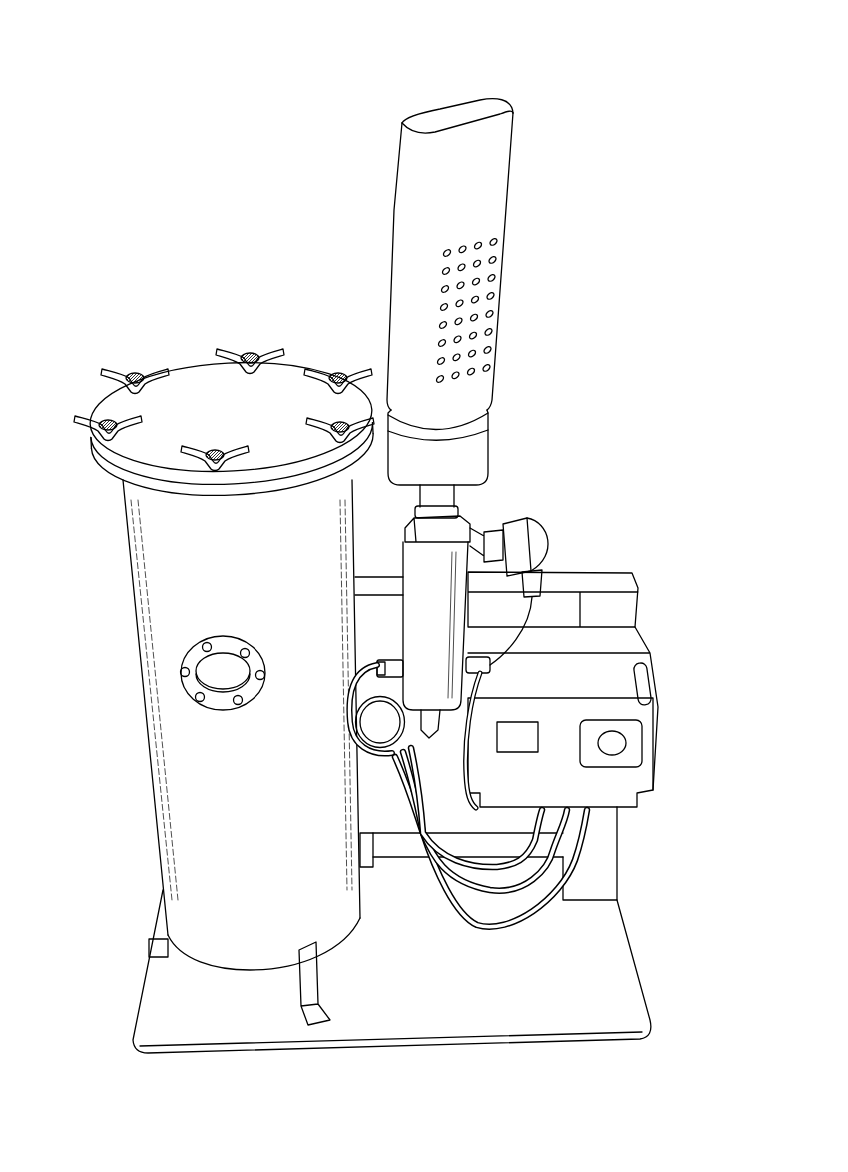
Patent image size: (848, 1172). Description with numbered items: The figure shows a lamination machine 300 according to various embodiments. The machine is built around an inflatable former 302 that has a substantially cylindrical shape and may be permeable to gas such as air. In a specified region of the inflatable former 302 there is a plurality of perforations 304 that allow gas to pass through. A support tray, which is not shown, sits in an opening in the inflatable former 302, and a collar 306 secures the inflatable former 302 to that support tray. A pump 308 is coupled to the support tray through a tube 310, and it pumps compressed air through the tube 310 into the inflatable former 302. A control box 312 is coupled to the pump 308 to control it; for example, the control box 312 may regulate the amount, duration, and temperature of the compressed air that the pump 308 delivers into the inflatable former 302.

The lamination machine 300 is at (169, 130).
The inflatable former 302 is at (482, 167).
The perforations 304 is at (490, 300).
The collar 306 is at (475, 428).
The pump 308 is at (178, 593).
The tube 310 is at (447, 637).
The control box 312 is at (607, 677).